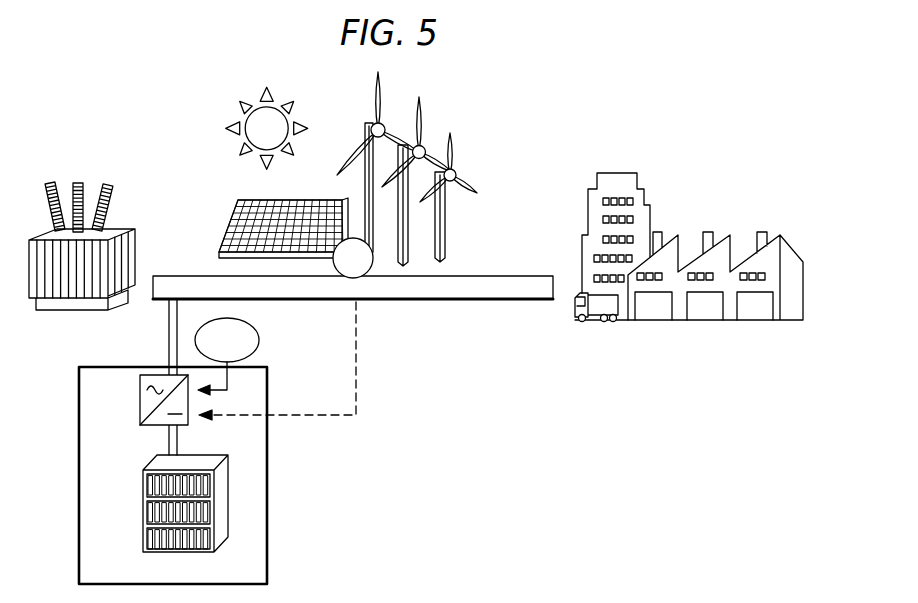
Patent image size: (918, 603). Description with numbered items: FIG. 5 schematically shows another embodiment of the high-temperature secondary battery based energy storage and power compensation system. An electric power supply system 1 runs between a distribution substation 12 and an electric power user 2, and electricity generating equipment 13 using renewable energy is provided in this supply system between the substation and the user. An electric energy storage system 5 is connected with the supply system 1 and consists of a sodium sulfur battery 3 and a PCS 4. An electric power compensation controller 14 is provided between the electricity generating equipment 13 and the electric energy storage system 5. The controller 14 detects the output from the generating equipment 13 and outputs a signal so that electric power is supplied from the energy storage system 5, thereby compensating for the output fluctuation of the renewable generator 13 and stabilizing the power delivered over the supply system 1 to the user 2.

The electric power supply system 1 is at (185, 276).
The electric power user 2 is at (675, 212).
The sodium sulfur battery 3 is at (143, 498).
The PCS 4 is at (140, 394).
The electric energy storage system 5 is at (196, 441).
The distribution substation 12 is at (87, 178).
The electricity generating equipment 13 is at (364, 274).
The electric power compensation controller 14 is at (259, 341).